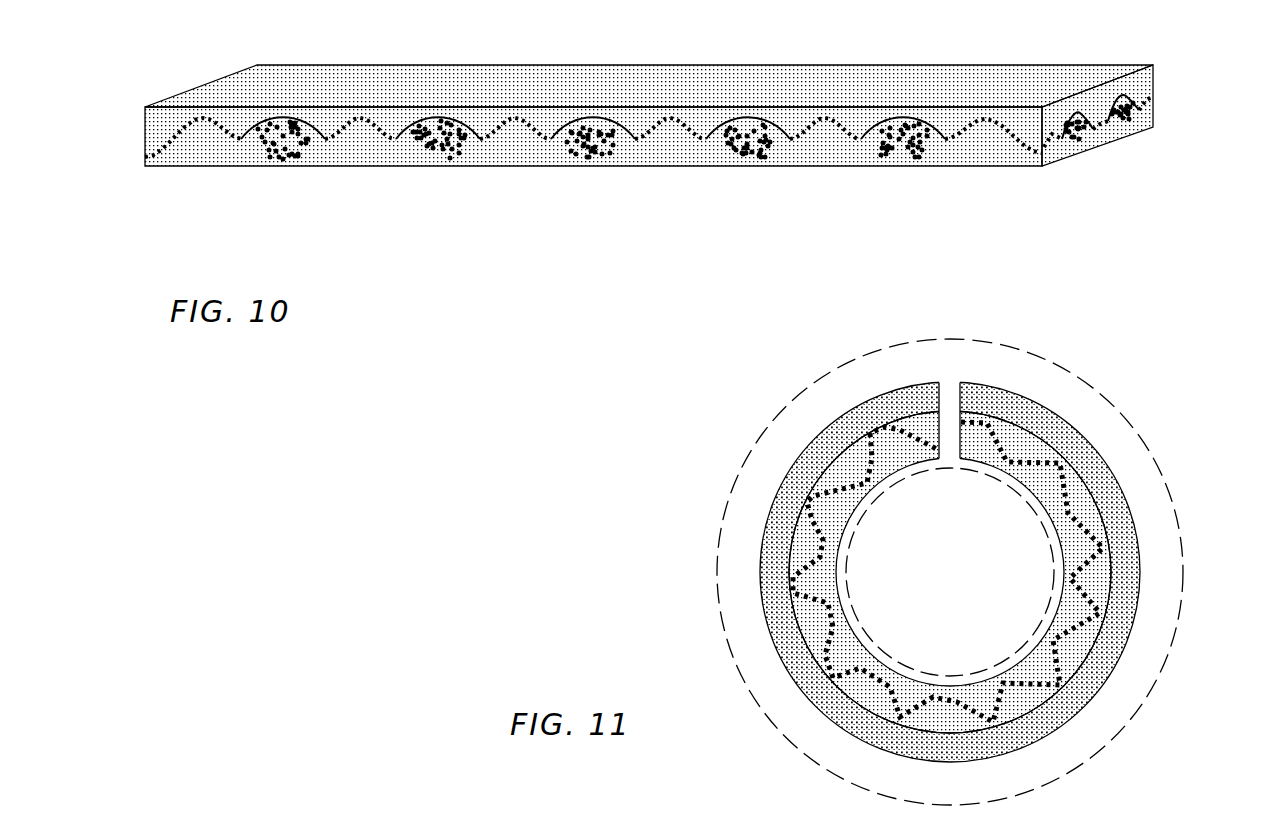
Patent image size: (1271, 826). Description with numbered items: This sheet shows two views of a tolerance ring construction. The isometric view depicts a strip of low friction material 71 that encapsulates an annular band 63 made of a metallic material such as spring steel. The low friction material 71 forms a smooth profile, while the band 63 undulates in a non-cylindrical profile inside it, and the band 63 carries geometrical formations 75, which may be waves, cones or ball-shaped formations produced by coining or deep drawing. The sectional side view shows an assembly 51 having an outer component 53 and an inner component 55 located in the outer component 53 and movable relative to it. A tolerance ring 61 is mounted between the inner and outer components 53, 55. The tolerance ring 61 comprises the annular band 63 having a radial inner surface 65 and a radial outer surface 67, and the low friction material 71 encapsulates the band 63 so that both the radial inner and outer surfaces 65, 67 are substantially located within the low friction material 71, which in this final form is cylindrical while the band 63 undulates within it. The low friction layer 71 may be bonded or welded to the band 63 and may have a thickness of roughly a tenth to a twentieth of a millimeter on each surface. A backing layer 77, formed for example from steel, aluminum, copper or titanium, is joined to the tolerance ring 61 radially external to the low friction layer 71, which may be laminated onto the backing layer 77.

In FIG. 11, the assembly 51 is at (986, 564).
In FIG. 11, the outer component 53 is at (961, 369).
In FIG. 11, the inner component 55 is at (961, 597).
In FIG. 11, the tolerance ring 61 is at (1128, 455).
In FIG. 10, the annular band 63 is at (167, 142).
In FIG. 11, the annular band 63 is at (1090, 587).
In FIG. 11, the radial inner surface 65 is at (1054, 578).
In FIG. 11, the radial outer surface 67 is at (1088, 578).
In FIG. 10, the low friction material 71 is at (152, 123).
In FIG. 11, the low friction material 71 is at (1075, 543).
In FIG. 10, the geometrical formations 75 is at (283, 117).
In FIG. 11, the backing layer 77 is at (1045, 415).